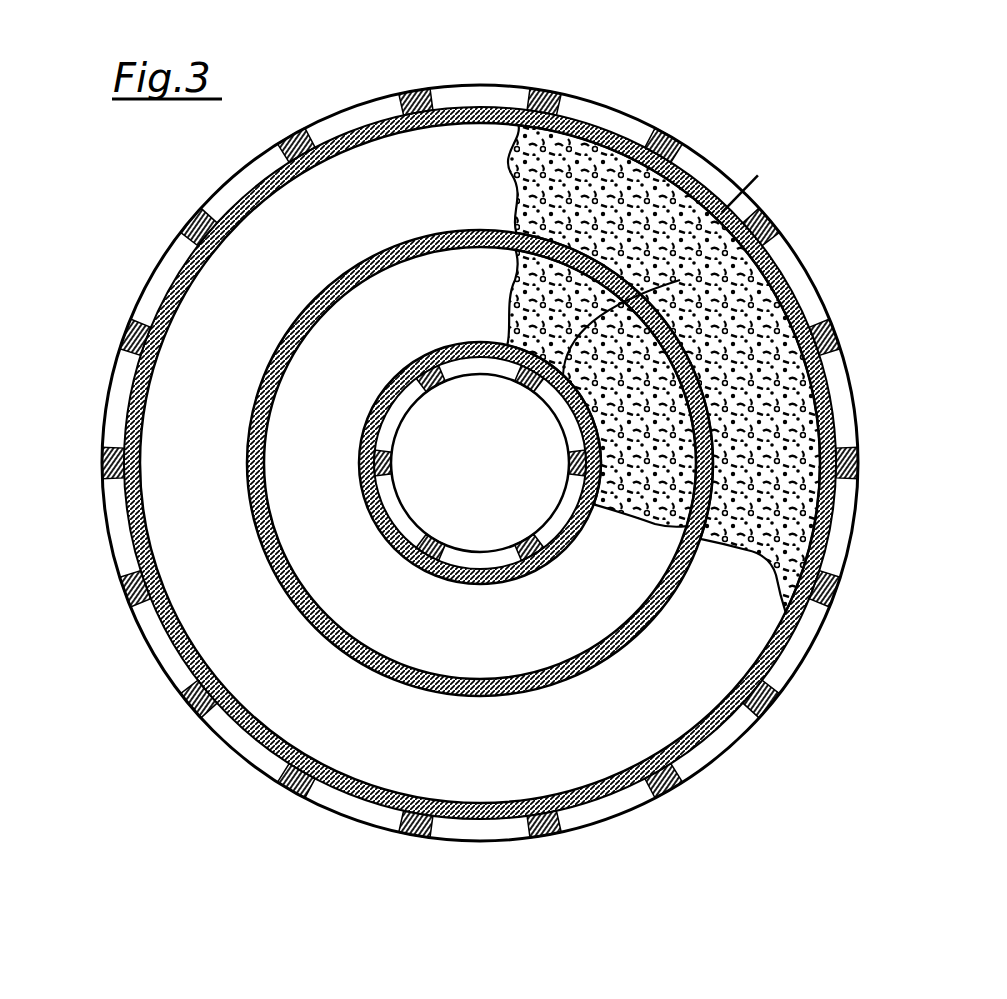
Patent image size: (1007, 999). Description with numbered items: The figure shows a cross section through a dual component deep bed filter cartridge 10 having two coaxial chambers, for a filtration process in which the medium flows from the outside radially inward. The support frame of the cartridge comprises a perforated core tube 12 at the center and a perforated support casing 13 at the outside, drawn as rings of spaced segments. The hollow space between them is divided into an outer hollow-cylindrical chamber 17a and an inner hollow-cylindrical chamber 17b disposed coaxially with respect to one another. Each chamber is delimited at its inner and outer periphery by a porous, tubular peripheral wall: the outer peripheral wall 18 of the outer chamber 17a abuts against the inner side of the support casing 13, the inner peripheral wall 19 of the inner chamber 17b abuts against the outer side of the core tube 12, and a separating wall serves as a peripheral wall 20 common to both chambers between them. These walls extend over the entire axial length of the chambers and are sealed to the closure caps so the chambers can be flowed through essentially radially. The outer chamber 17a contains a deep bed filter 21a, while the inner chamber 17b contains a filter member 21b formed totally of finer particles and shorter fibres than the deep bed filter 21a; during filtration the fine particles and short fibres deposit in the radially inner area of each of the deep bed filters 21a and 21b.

The deep bed filter cartridge 10 is at (730, 108).
The perforated core tube 12 is at (390, 408).
The perforated support casing 13 is at (788, 257).
The outer hollow-cylindrical chamber 17a is at (253, 288).
The inner hollow-cylindrical chamber 17b is at (402, 607).
The outer peripheral wall 18 is at (363, 487).
The inner peripheral wall 19 is at (530, 420).
The intermediate peripheral wall 20 is at (332, 640).
The outer deep bed filter 21a is at (813, 590).
The inner deep bed filter 21b is at (680, 467).